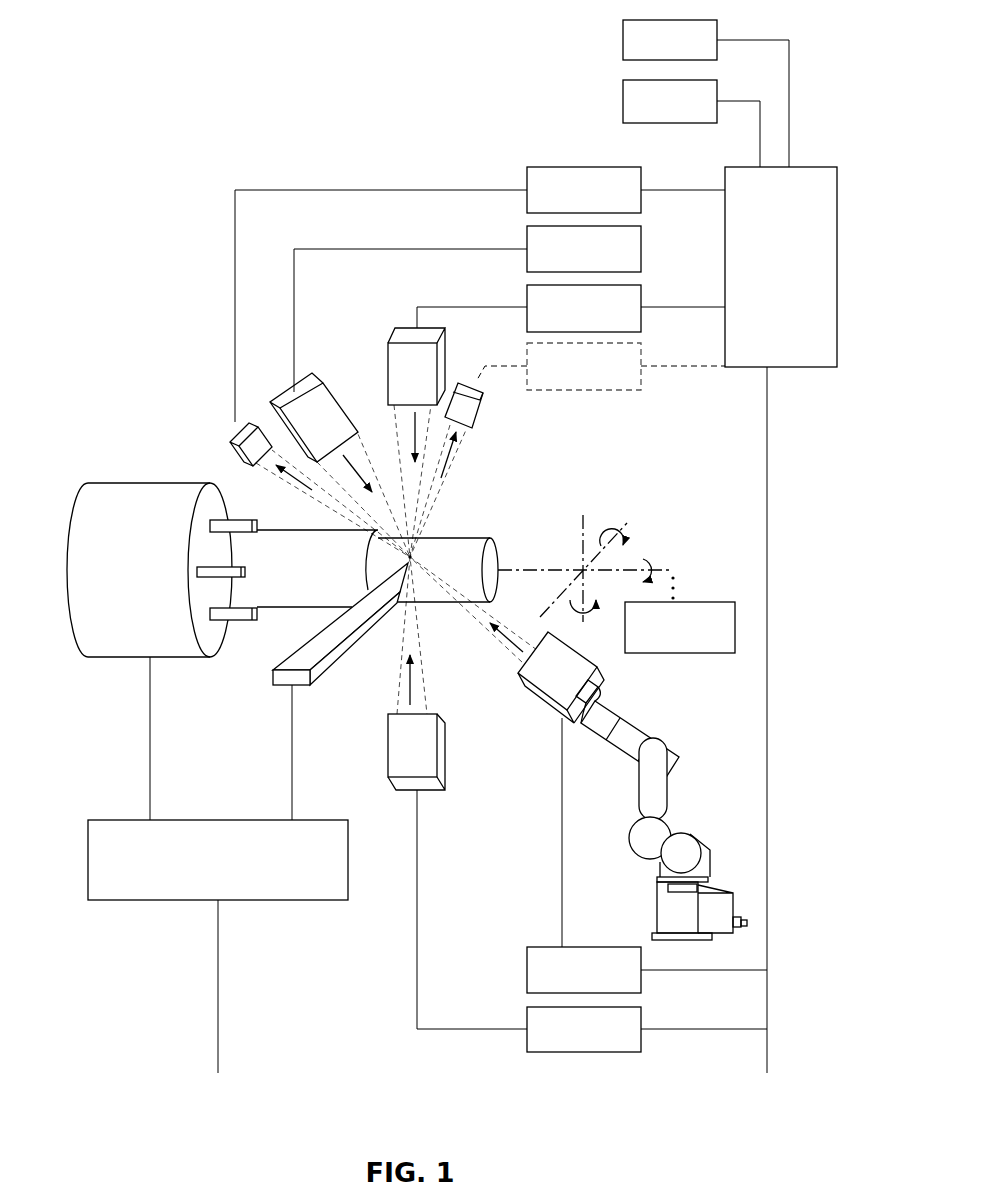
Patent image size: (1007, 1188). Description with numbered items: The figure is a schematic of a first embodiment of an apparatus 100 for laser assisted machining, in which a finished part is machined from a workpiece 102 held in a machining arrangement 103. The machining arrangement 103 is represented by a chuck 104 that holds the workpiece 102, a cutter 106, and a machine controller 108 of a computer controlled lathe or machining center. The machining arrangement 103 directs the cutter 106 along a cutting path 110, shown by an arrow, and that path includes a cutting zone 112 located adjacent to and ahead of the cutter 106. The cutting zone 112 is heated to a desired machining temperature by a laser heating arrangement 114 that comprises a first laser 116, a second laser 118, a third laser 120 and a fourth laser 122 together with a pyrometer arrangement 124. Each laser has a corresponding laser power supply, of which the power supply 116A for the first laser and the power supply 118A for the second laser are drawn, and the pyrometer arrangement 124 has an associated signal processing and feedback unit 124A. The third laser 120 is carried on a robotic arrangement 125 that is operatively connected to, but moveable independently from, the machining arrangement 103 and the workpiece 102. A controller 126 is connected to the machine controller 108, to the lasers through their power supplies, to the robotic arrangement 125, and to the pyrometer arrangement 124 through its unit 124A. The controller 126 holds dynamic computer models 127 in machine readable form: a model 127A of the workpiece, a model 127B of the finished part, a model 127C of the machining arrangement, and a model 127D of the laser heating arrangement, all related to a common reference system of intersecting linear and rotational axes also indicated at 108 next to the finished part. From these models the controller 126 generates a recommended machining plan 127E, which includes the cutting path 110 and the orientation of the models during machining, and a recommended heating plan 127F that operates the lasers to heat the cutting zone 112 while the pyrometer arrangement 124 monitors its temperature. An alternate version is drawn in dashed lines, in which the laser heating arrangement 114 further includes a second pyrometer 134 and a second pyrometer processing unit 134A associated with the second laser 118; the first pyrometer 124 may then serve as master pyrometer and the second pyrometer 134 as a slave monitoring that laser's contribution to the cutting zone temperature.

The apparatus for laser assisted machining 100 is at (448, 1113).
The workpiece 102 is at (302, 598).
The machining arrangement 103 is at (140, 768).
The chuck 104 is at (103, 493).
The cutter 106 is at (283, 680).
The machine controller 108 is at (632, 550).
The cutting path 110 is at (427, 518).
The cutting zone 112 is at (422, 544).
The laser heating arrangement 114 is at (557, 470).
The first laser 116 is at (326, 388).
The laser power supply 116A is at (556, 261).
The second laser 118 is at (389, 348).
The laser power supply 118A is at (556, 320).
The third laser 120 is at (547, 683).
The fourth laser 122 is at (402, 750).
The pyrometer arrangement 124 is at (236, 455).
The signal processing and feedback unit 124A is at (556, 202).
The robotic arrangement 125 is at (672, 842).
The controller 126 is at (783, 375).
The dynamic computer models 127 is at (800, 228).
The dynamic computer model of the workpiece 127A is at (751, 215).
The dynamic computer model of the finished part 127B is at (751, 257).
The dynamic computer model of the machining arrangement 127C is at (751, 299).
The dynamic computer model of the laser heating arrangement 127D is at (751, 341).
The recommended machining plan 127E is at (643, 52).
The recommended heating plan 127F is at (643, 113).
The second pyrometer 134 is at (472, 417).
The second pyrometer processing unit 134A is at (556, 378).